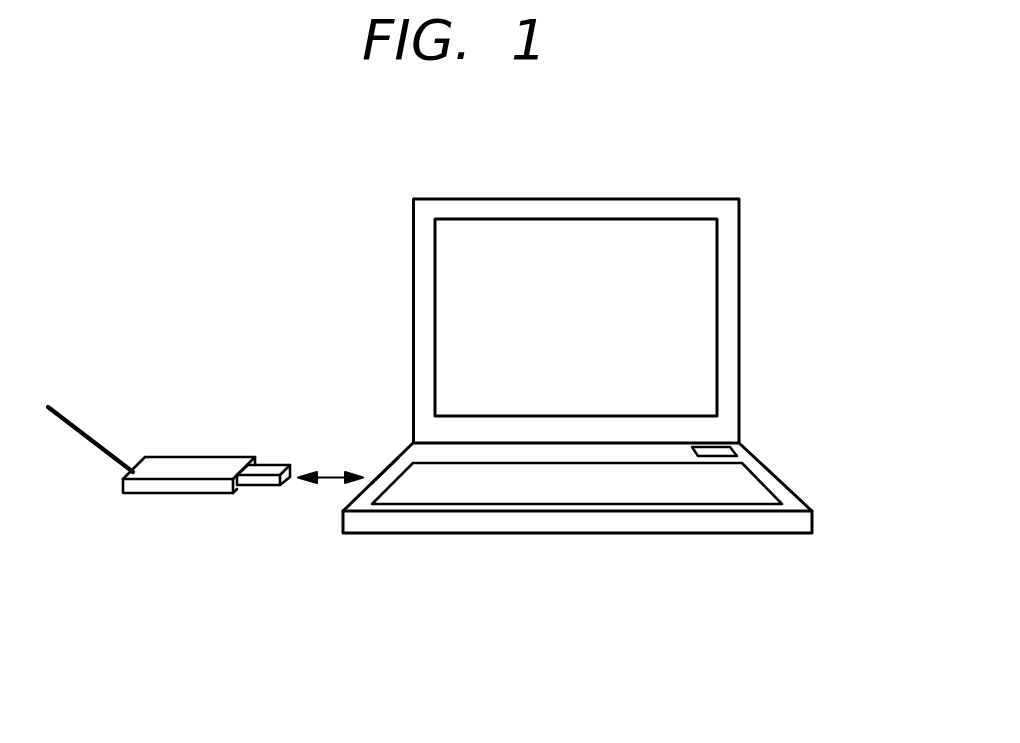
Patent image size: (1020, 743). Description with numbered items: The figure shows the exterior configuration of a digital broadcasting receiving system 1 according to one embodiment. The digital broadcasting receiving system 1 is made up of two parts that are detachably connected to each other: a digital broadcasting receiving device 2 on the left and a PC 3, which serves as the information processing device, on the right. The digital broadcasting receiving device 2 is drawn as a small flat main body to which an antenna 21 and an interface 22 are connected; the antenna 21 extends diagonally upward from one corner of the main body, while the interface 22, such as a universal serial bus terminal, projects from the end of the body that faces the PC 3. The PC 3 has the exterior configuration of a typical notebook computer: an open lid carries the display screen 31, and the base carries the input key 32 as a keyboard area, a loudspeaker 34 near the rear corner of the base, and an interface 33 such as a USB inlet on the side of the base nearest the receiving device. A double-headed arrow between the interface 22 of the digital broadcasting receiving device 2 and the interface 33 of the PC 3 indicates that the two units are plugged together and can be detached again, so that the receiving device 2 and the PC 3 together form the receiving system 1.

The digital broadcasting receiving system 1 is at (372, 156).
The digital broadcasting receiving device 2 is at (193, 460).
The antenna 21 is at (78, 419).
The interface (I/F) 22 is at (269, 467).
The PC 3 is at (575, 533).
The display screen 31 is at (702, 273).
The input key 32 is at (743, 483).
The interface (I/F) 33 is at (378, 475).
The loudspeaker 34 is at (722, 452).